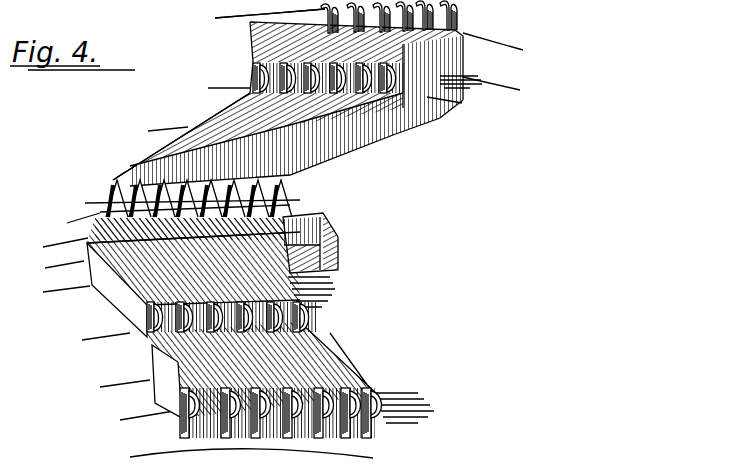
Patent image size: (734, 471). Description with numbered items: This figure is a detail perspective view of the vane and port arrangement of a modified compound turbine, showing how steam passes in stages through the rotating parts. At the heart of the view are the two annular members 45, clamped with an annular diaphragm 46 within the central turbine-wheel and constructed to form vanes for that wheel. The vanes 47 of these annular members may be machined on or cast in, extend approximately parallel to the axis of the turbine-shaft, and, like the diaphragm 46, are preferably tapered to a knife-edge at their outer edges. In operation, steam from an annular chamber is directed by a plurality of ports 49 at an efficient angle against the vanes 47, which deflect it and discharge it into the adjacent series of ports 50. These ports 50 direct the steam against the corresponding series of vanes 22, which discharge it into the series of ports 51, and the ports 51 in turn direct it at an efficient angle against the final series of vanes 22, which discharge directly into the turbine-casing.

The vanes 22 is at (458, 22).
The annular members 45 is at (333, 232).
The annular diaphragm 46 is at (280, 208).
The vanes 47 is at (112, 192).
The ports 49 is at (300, 12).
The ports 50 is at (206, 122).
The ports 51 is at (452, 50).